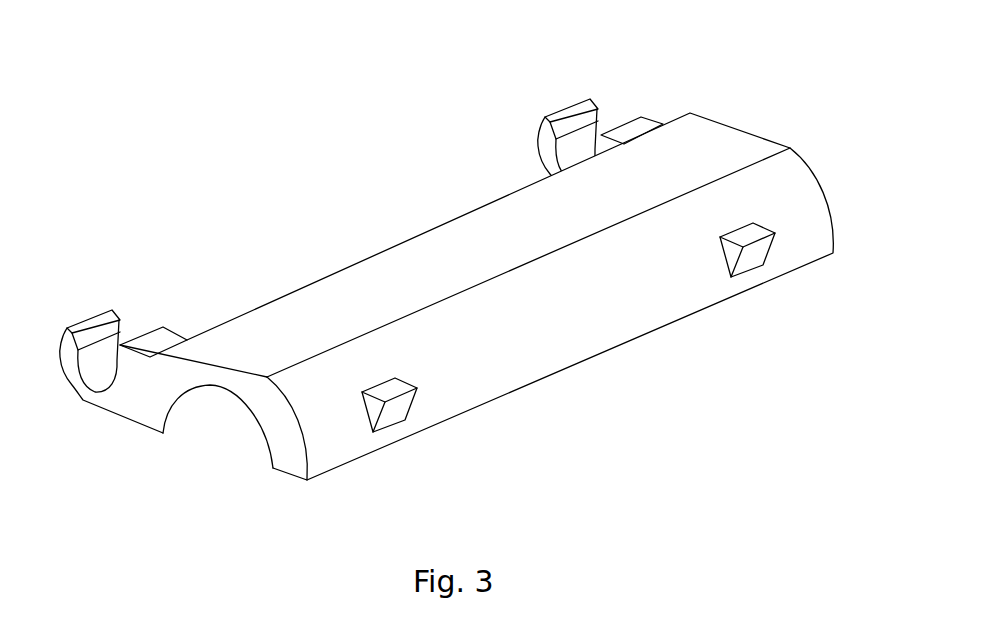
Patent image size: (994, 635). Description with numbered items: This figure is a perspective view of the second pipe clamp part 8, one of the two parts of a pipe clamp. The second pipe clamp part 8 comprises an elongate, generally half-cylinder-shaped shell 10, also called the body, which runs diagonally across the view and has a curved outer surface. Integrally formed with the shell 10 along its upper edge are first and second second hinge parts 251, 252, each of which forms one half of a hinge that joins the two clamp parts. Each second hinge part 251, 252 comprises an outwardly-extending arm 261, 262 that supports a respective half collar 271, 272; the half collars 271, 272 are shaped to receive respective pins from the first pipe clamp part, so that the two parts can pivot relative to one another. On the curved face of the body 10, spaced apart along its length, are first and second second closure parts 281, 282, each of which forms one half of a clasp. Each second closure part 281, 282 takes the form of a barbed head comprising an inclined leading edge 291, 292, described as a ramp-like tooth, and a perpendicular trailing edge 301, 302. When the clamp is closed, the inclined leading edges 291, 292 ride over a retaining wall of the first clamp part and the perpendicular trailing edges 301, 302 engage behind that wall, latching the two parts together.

The second pipe clamp part 8 is at (776, 110).
The shell 10 is at (274, 431).
The first second hinge part 251 is at (89, 324).
The second second hinge part 252 is at (576, 106).
The outwardly-extending arm 261 is at (141, 412).
The outwardly-extending arm 262 is at (644, 127).
The half collar 271 is at (56, 393).
The half collar 272 is at (533, 146).
The first second closure part 281 is at (414, 415).
The second second closure part 282 is at (776, 254).
The inclined leading edge 291 is at (370, 419).
The inclined leading edge 292 is at (730, 262).
The perpendicular trailing edge 301 is at (387, 389).
The perpendicular trailing edge 302 is at (749, 229).